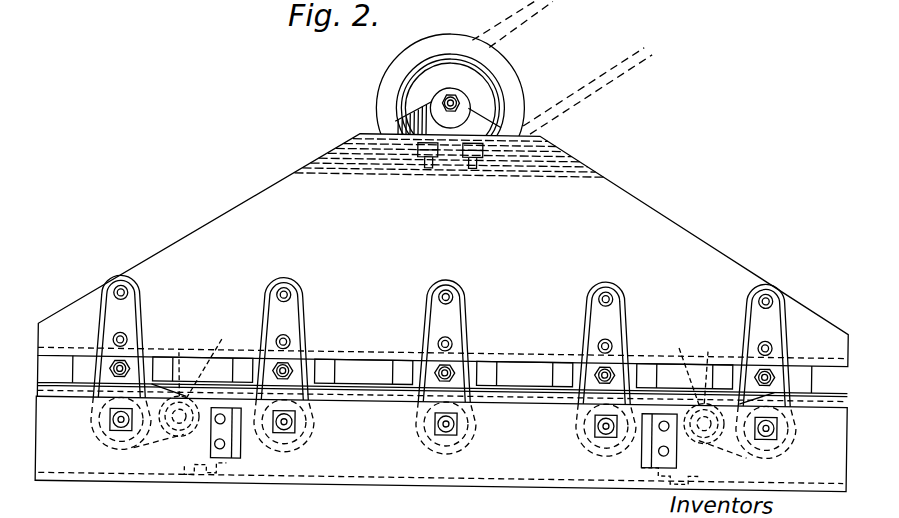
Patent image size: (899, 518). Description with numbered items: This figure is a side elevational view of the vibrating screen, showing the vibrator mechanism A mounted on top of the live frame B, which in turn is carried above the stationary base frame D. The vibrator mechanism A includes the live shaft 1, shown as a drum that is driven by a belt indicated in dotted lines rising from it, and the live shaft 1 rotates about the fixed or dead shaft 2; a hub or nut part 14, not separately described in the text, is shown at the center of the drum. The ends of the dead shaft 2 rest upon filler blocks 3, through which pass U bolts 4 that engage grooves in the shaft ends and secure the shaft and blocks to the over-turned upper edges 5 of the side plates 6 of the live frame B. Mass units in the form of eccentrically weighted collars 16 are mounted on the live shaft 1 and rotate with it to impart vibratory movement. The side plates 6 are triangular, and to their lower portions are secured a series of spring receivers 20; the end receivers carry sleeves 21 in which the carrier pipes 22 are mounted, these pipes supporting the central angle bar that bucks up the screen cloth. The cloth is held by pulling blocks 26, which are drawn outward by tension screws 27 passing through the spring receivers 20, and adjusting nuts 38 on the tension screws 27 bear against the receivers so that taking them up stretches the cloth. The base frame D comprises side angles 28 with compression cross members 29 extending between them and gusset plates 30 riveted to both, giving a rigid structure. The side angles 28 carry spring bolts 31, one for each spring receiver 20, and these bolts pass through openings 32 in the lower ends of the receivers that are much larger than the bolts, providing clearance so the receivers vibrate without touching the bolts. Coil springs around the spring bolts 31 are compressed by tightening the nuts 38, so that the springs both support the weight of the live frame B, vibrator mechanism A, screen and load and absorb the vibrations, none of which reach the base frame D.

The live shaft 1 is at (426, 54).
The dead shaft 2 is at (395, 81).
The filler blocks 3 is at (481, 128).
The U bolts 4 is at (427, 96).
The over-turned upper edges 5 is at (520, 138).
The side plates 6 is at (618, 202).
The axle nut 14 is at (447, 98).
The collars 16 is at (507, 80).
The spring receivers 20 is at (128, 317).
The sleeves 21 is at (443, 362).
The carrier pipes 22 is at (193, 353).
The pulling blocks 26 is at (160, 357).
The tension screws 27 is at (108, 372).
The side angles 28 is at (317, 459).
The compression cross members 29 is at (240, 453).
The gusset plates 30 is at (208, 472).
The spring bolts 31 is at (118, 423).
The openings 32 is at (118, 445).
The nuts 38 is at (118, 364).
The vibrator mechanism A is at (498, 57).
The live frame B is at (590, 239).
The base frame D is at (362, 461).